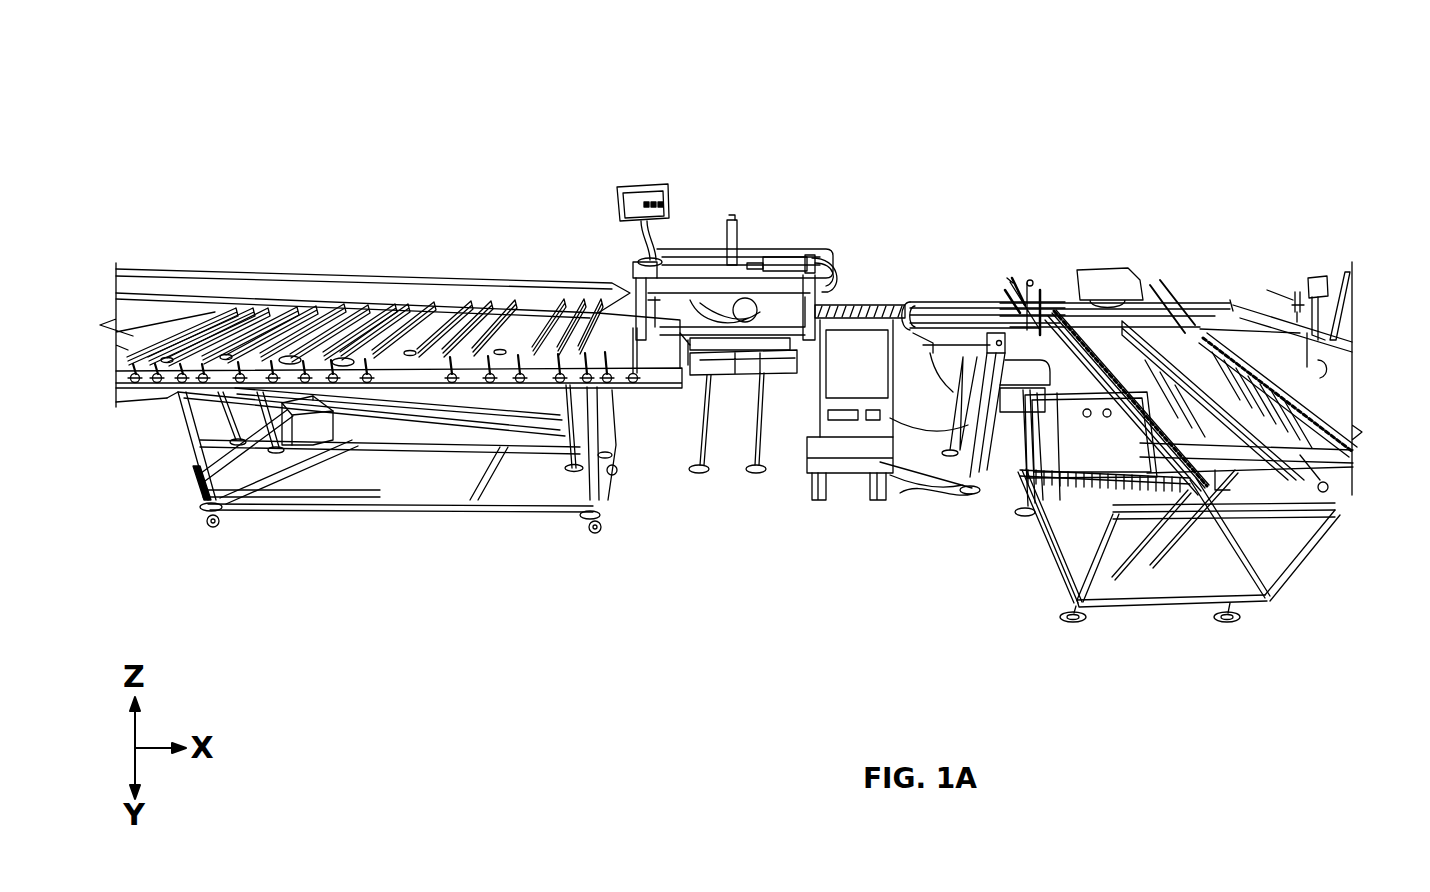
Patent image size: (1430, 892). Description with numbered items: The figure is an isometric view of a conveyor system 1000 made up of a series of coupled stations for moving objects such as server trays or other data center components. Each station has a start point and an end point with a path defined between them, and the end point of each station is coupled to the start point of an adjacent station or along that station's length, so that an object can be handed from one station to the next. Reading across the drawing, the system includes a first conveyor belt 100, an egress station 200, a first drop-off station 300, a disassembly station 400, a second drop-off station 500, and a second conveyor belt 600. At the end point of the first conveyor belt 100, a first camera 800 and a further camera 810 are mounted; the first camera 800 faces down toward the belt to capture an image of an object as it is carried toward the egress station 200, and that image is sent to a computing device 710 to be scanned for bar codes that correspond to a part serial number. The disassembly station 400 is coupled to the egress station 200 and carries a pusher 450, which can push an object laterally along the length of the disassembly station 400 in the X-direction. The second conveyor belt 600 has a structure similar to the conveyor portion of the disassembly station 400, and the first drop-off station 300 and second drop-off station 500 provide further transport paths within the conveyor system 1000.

The conveyor system 1000 is at (180, 80).
The first conveyor belt 100 is at (1252, 292).
The egress station 200 is at (961, 305).
The first drop-off station 300 is at (1154, 336).
The disassembly station 400 is at (774, 240).
The pusher 450 is at (823, 260).
The second drop-off station 500 is at (598, 336).
The second conveyor belt 600 is at (406, 276).
The computing device 710 is at (1370, 260).
The first camera 800 is at (1322, 293).
The camera 810 is at (1298, 293).